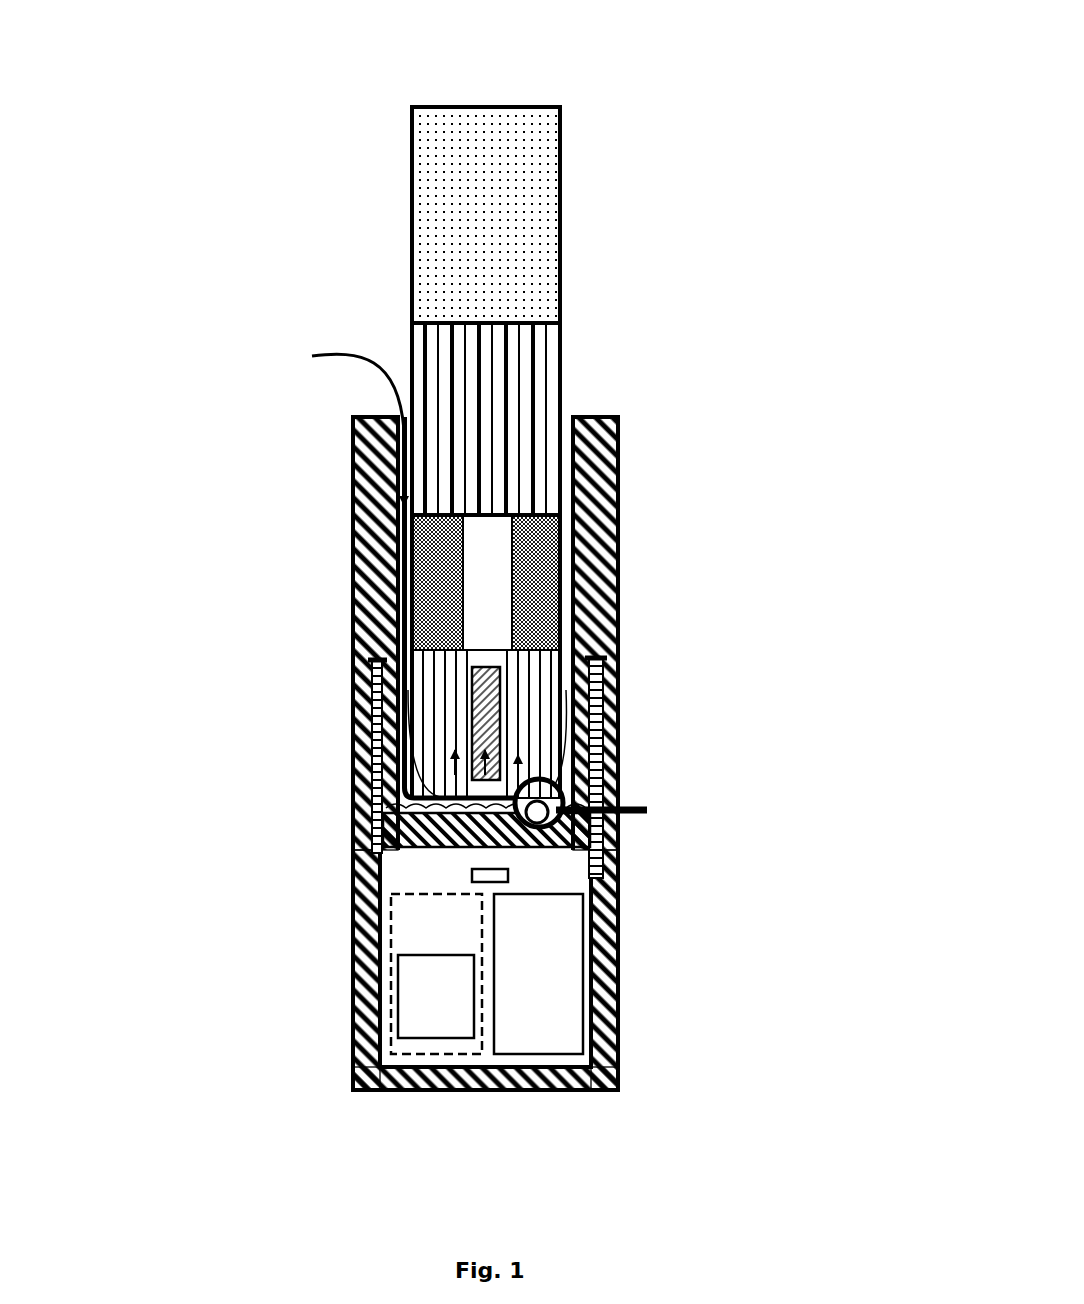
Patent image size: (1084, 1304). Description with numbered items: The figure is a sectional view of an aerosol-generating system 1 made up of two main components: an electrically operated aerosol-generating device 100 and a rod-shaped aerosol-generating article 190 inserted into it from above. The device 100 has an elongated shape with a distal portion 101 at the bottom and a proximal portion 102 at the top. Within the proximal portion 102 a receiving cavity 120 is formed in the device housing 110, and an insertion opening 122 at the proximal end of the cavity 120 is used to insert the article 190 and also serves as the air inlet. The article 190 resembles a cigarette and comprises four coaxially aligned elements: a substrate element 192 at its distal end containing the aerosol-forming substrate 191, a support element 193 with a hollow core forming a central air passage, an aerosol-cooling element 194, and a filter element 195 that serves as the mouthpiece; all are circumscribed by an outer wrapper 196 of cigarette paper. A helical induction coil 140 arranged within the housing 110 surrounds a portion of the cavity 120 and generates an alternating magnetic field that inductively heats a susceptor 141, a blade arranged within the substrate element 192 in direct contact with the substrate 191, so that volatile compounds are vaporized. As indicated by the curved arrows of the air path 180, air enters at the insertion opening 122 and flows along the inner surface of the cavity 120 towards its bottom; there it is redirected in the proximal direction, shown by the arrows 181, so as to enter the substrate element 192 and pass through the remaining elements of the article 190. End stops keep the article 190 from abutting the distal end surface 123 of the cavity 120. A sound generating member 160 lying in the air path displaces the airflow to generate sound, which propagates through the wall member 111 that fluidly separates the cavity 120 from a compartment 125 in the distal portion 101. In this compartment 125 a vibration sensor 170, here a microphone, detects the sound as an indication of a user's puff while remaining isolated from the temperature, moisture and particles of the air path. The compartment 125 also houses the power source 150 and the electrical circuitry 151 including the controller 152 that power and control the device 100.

The aerosol-generating system 1 is at (318, 186).
The aerosol-generating device 100 is at (499, 768).
The distal portion 101 is at (624, 1011).
The proximal portion 102 is at (499, 633).
The device housing 110 is at (372, 598).
The wall member 111 is at (577, 826).
The receiving cavity 120 is at (407, 552).
The insertion opening 122 is at (397, 411).
The distal end surface 123 is at (546, 808).
The compartment 125 is at (410, 866).
The induction coil 140 is at (598, 745).
The susceptor 141 is at (478, 724).
The power source 150 is at (584, 913).
The electrical circuitry 151 is at (393, 903).
The controller 152 is at (418, 1008).
The sound generating member 160 is at (383, 832).
The vibration sensor 170 is at (508, 875).
The air path 180 is at (358, 413).
The redirected airflow 181 is at (428, 786).
The aerosol-generating article 190 is at (455, 408).
The aerosol-forming substrate 191 is at (548, 722).
The substrate element 192 is at (522, 690).
The support element 193 is at (536, 545).
The aerosol-cooling element 194 is at (522, 394).
The filter element 195 is at (536, 272).
The outer wrapper 196 is at (537, 198).